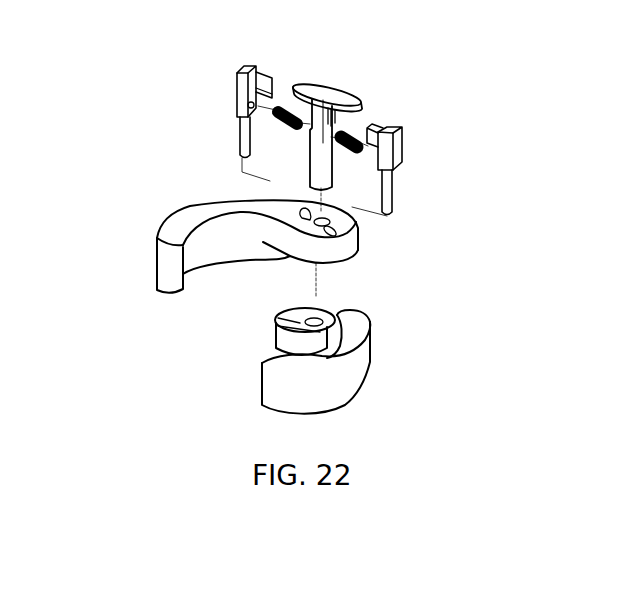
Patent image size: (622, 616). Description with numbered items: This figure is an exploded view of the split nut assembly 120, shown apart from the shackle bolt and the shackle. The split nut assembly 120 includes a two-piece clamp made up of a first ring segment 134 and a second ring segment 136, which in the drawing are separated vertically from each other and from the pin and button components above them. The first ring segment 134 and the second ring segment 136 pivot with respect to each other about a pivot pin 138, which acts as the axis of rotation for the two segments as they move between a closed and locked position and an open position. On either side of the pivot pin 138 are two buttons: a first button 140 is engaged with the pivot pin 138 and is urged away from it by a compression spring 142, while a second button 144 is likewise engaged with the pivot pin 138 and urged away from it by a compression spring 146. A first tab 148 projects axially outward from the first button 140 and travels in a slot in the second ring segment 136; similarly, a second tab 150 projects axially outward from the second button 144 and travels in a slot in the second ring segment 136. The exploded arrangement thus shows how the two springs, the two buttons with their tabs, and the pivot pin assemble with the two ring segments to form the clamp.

The split nut assembly 120 is at (452, 303).
The first ring segment 134 is at (352, 380).
The second ring segment 136 is at (160, 228).
The pivot pin 138 is at (328, 92).
The first button 140 is at (395, 150).
The compression spring 142 is at (348, 135).
The second button 144 is at (238, 85).
The compression spring 146 is at (287, 110).
The first tab 148 is at (392, 193).
The second tab 150 is at (243, 132).